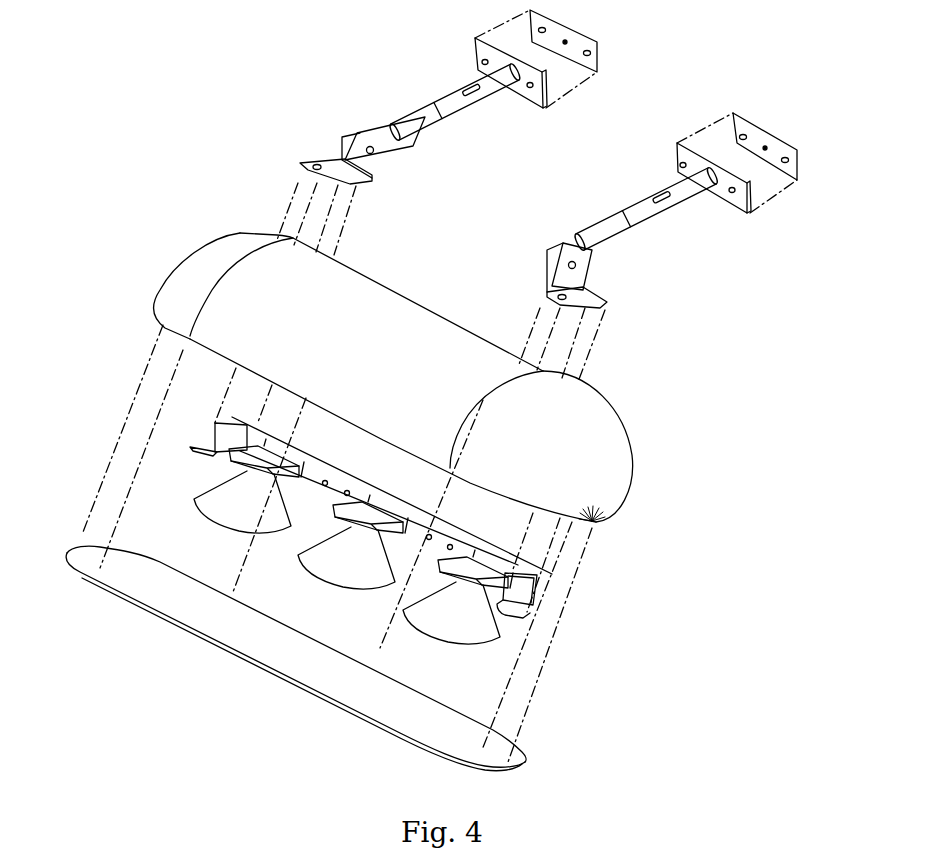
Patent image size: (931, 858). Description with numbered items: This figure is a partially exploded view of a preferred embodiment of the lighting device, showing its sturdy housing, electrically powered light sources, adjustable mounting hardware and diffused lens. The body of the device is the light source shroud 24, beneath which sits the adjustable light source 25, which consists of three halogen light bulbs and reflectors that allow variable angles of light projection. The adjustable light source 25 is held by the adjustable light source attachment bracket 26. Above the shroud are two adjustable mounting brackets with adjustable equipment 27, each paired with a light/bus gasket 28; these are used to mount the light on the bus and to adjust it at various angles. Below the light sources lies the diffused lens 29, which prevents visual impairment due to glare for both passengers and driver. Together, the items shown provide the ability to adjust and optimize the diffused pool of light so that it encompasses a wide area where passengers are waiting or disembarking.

The light source shroud 24 is at (636, 477).
The adjustable light source 25 is at (430, 632).
The adjustable light source attachment bracket 26 is at (543, 597).
The adjustable mounting bracket with adjustable equipment 27 is at (425, 113).
The light/bus gasket 28 is at (600, 33).
The diffused lens 29 is at (148, 616).